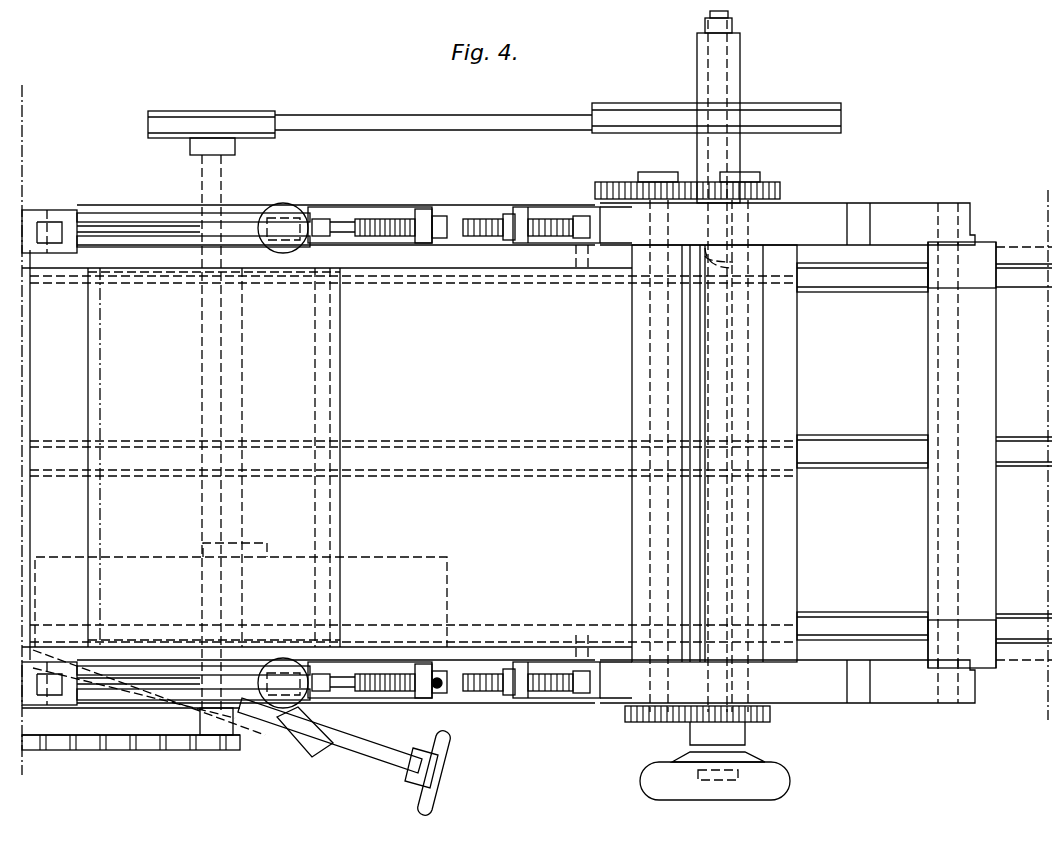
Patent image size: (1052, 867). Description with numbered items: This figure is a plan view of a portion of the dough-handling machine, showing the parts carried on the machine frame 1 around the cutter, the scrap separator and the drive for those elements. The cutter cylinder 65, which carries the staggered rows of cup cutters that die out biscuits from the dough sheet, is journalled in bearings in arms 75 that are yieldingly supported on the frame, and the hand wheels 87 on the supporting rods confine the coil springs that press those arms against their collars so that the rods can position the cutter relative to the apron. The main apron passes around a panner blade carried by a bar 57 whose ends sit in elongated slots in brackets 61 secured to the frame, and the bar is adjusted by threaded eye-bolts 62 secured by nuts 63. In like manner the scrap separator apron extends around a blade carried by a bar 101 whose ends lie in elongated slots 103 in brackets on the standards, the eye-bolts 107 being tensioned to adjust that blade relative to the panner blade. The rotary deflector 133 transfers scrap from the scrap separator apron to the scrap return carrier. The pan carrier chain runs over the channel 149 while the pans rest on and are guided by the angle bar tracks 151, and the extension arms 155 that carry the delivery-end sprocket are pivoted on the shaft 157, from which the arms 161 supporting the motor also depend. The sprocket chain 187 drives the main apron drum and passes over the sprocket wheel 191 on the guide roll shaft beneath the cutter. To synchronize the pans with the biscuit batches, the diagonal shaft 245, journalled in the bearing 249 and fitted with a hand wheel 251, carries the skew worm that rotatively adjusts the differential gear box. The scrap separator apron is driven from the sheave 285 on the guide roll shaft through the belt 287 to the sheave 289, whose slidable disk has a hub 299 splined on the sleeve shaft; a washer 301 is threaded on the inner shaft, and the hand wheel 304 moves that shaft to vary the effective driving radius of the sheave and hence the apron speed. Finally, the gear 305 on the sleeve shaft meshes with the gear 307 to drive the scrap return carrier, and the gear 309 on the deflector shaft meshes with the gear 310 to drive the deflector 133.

The frame 1 is at (893, 213).
The bar 57 is at (326, 703).
The brackets 61 is at (362, 247).
The threaded eye-bolts 62 is at (362, 222).
The nuts 63 is at (440, 693).
The cylinder 65 is at (100, 378).
The arms 75 is at (100, 228).
The hand wheels 87 is at (290, 206).
The bar 101 is at (578, 700).
The elongated slots 103 is at (552, 247).
The eye-bolts 107 is at (480, 222).
The rotary deflector 133 is at (800, 588).
The channel 149 is at (845, 468).
The angle bar tracks 151 is at (845, 293).
The extension arms 155 is at (1014, 246).
The shaft 157 is at (936, 545).
The arms 161 is at (976, 250).
The sprocket chain 187 is at (60, 752).
The sprocket wheel 191 is at (222, 750).
The shaft 245 is at (262, 742).
The bearing 249 is at (322, 758).
The hand wheel 251 is at (446, 794).
The sheave 285 is at (262, 113).
The belt 287 is at (466, 120).
The sheave 289 is at (824, 93).
The hub 299 is at (741, 80).
The washer 301 is at (733, 36).
The hand wheel 304 is at (791, 790).
The gear 305 is at (770, 720).
The gear 307 is at (650, 723).
The gear 309 is at (779, 189).
The gear 310 is at (606, 185).